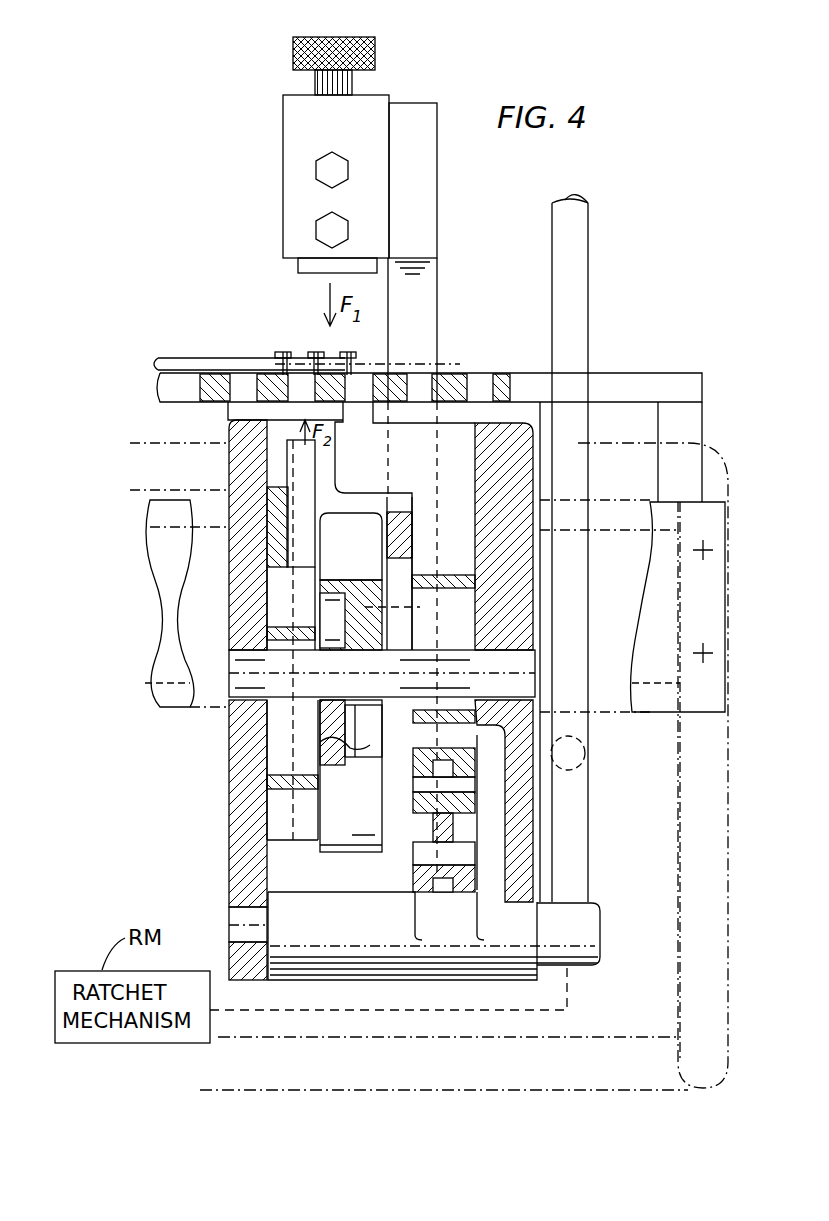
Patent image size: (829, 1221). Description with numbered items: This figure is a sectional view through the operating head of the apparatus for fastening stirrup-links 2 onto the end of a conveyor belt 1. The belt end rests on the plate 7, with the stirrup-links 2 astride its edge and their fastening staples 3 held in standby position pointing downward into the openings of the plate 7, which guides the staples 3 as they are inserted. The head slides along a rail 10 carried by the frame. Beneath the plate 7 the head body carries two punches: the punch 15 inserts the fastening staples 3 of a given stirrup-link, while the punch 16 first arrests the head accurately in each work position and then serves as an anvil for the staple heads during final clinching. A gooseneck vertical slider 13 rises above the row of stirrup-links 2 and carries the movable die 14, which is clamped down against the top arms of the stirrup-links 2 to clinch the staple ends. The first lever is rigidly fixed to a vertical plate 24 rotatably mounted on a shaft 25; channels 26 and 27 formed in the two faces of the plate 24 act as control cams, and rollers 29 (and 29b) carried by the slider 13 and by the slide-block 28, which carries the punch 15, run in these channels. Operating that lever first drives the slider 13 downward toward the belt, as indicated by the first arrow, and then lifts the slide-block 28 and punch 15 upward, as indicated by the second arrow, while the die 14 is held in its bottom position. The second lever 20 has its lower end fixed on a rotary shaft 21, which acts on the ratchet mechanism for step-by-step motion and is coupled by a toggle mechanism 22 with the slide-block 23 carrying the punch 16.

The conveyor belt 1 is at (168, 358).
The stirrup-links 2 is at (285, 352).
The fastening staples 3 is at (332, 355).
The plate 7 is at (222, 372).
The rail 10 is at (668, 714).
The vertical slider 13 is at (418, 325).
The movable die 14 is at (298, 264).
The punch 15 is at (302, 470).
The punch 16 is at (355, 398).
The control lever 20 is at (572, 328).
The rotary shaft 21 is at (580, 928).
The toggle mechanism 22 is at (425, 815).
The slide-block 23 is at (470, 462).
The vertical plate 24 is at (340, 835).
The shaft 25 is at (250, 680).
The channel 26 is at (322, 748).
The channel 27 is at (358, 608).
The slide-block 28 is at (282, 573).
The rollers 29 is at (332, 598).
The spring seat (lower) 29b is at (365, 755).